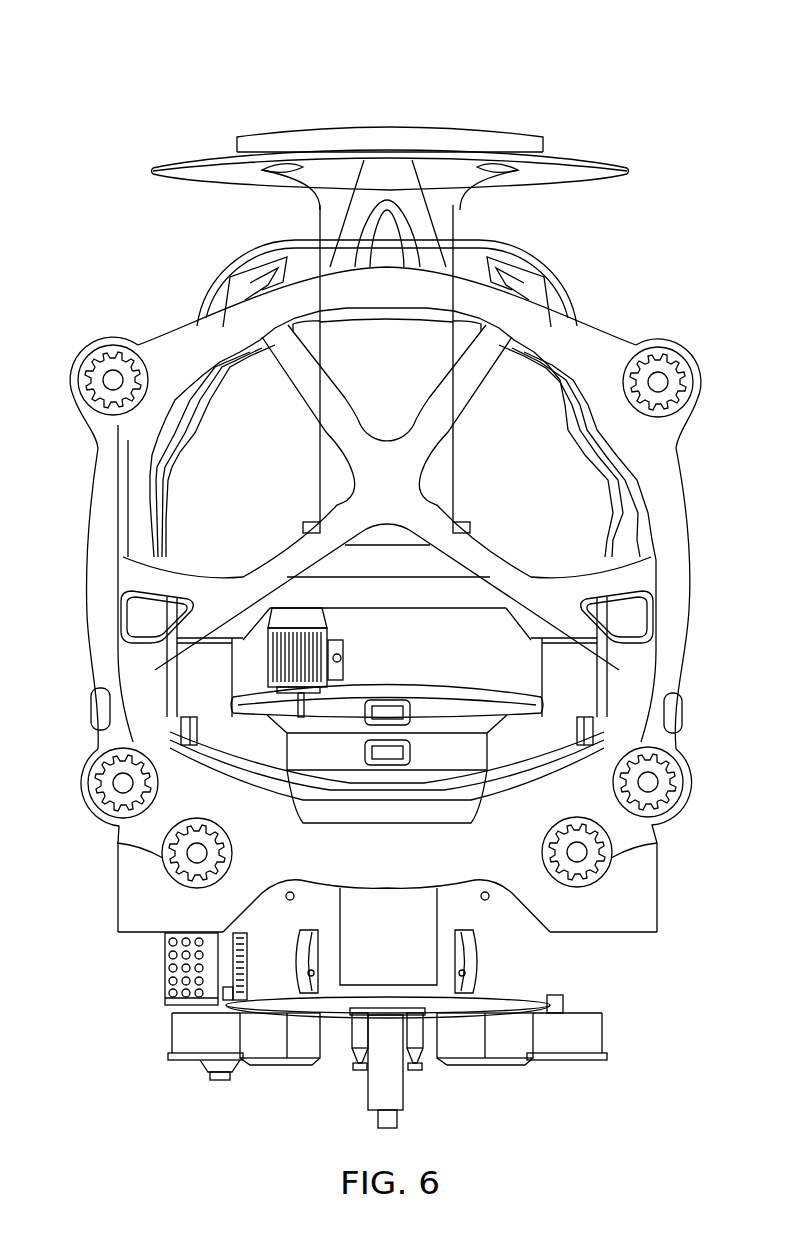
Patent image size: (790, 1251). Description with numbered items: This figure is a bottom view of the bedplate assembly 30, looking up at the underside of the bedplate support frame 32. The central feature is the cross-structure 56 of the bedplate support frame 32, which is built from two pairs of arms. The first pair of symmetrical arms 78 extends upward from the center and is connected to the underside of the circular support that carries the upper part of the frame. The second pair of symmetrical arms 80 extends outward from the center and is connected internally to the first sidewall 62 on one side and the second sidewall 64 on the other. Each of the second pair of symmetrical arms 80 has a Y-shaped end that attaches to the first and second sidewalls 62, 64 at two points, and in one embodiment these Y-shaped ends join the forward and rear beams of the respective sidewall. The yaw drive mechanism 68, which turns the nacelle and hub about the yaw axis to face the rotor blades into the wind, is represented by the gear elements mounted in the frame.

The bedplate assembly 30 is at (660, 65).
The bedplate support frame 32 is at (690, 462).
The cross-structure 56 is at (428, 484).
The first sidewall 62 is at (90, 582).
The second sidewall 64 is at (683, 568).
The yaw drive mechanism 68 is at (162, 860).
The first pair of symmetrical arms 78 is at (422, 410).
The second pair of symmetrical arms 80 is at (453, 560).